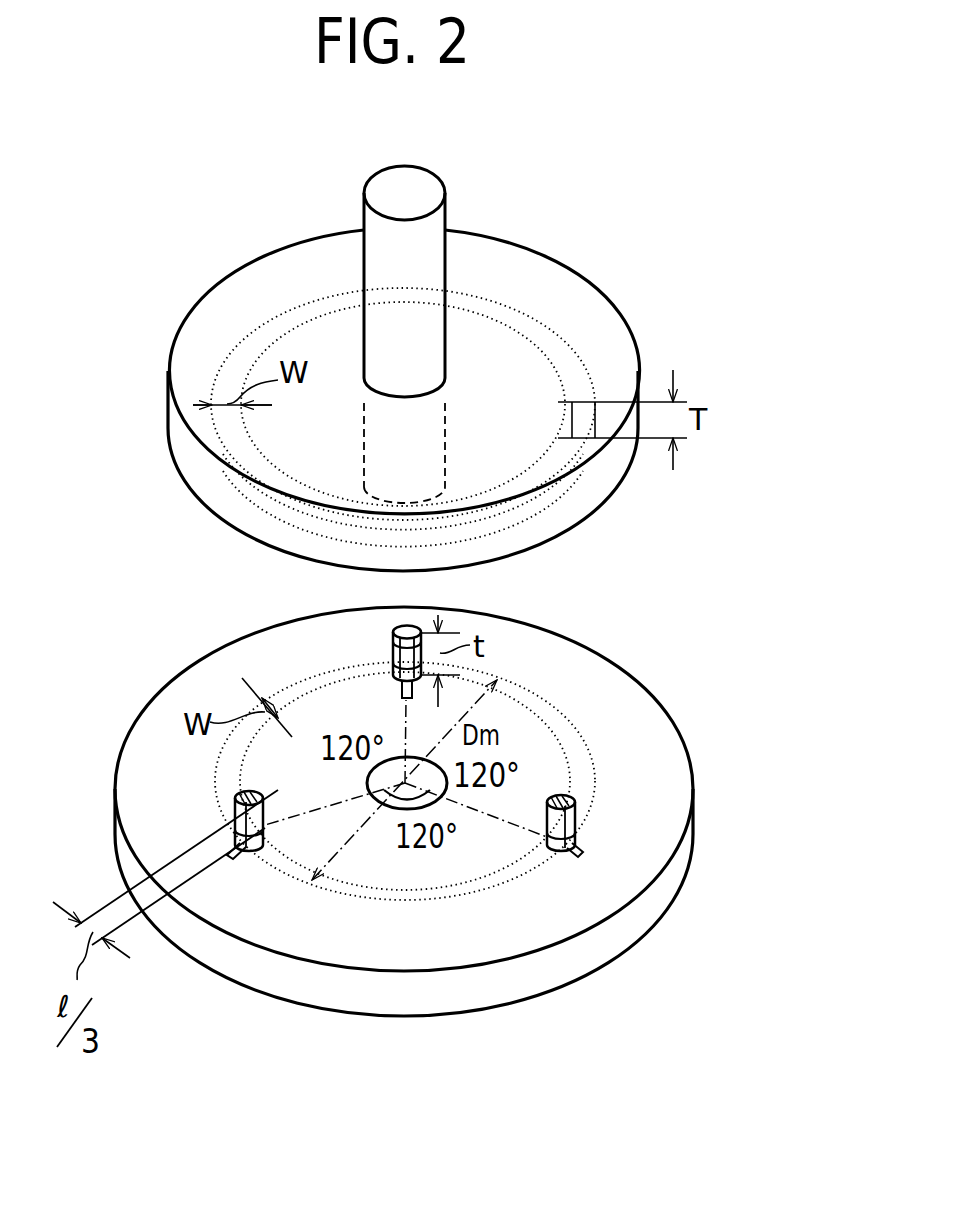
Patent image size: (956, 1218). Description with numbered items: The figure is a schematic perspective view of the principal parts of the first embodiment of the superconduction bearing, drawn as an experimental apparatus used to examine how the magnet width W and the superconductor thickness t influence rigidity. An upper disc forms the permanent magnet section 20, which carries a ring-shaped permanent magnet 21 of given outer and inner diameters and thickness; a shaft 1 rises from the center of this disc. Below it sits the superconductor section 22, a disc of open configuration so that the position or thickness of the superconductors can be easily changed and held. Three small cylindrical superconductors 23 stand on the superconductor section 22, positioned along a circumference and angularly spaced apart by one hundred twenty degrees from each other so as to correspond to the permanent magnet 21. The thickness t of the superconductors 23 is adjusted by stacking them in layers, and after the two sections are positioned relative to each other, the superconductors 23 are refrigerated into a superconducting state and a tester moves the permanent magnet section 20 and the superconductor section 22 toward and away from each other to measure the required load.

The shaft 1 is at (432, 195).
The permanent magnet section 20 is at (592, 284).
The permanent magnet 21 is at (583, 365).
The superconductor section 22 is at (660, 737).
The superconductor 23 is at (392, 652).